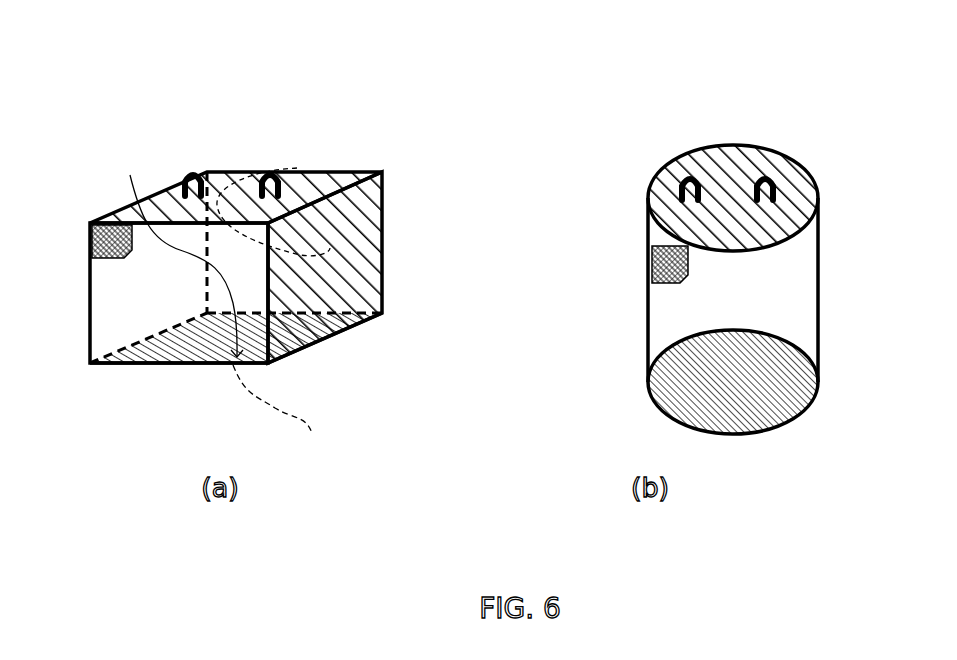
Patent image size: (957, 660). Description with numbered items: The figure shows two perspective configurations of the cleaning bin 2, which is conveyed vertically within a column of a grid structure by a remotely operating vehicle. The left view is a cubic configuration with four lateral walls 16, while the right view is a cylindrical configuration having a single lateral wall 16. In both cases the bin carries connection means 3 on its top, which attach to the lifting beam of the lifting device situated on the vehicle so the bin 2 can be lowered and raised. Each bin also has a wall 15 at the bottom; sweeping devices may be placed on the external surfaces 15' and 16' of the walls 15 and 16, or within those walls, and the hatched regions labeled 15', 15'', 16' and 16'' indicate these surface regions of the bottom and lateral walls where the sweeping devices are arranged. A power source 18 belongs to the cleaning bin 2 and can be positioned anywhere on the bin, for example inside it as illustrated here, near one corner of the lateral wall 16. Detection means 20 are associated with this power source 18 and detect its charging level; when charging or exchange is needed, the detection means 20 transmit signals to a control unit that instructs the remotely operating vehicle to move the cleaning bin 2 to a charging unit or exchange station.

In FIG. 6a, the cleaning bin 2 is at (251, 255).
In FIG. 6b, the cleaning bin 2 is at (742, 235).
In FIG. 6a, the connection means 3 is at (195, 173).
In FIG. 6b, the connection means 3 is at (748, 160).
In FIG. 6a, the bottom wall 15 is at (203, 372).
In FIG. 6b, the bottom wall 15 is at (762, 389).
In FIG. 6a, the external surface of bottom wall 15' is at (288, 415).
In FIG. 6a, the bottom wall outer portion 15'' is at (171, 250).
In FIG. 6a, the lateral wall 16 is at (371, 267).
In FIG. 6b, the lateral wall 16 is at (786, 290).
In FIG. 6a, the external surface of lateral wall 16' is at (399, 238).
In FIG. 6a, the side wall upper region 16'' is at (358, 200).
In FIG. 6a, the power source 18 is at (115, 222).
In FIG. 6b, the power source 18 is at (660, 248).
In FIG. 6a, the detection means 20 is at (92, 238).
In FIG. 6b, the detection means 20 is at (648, 262).